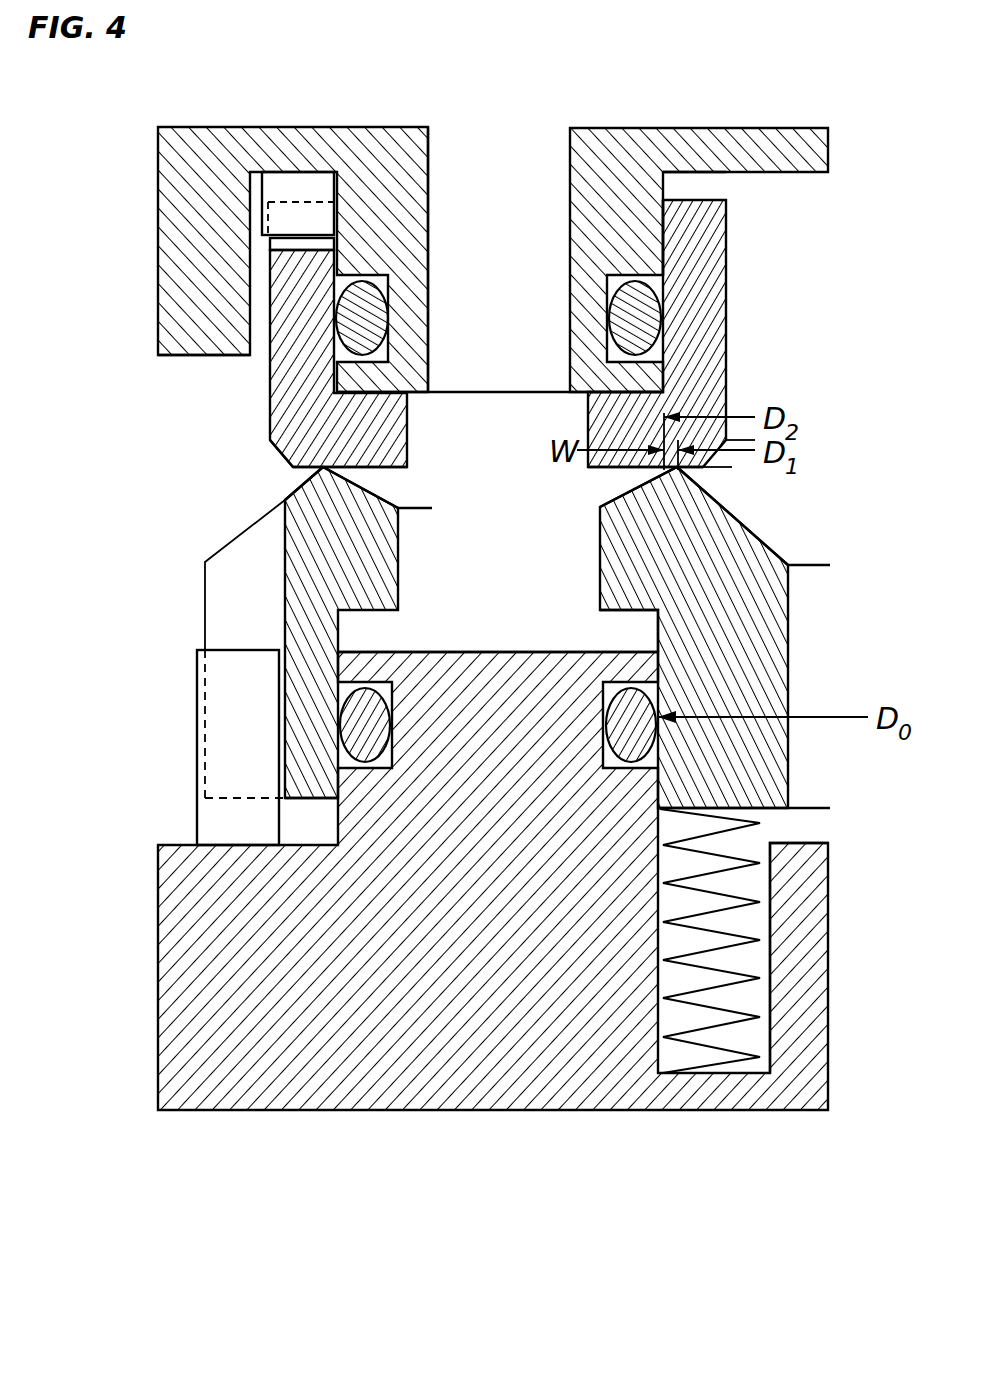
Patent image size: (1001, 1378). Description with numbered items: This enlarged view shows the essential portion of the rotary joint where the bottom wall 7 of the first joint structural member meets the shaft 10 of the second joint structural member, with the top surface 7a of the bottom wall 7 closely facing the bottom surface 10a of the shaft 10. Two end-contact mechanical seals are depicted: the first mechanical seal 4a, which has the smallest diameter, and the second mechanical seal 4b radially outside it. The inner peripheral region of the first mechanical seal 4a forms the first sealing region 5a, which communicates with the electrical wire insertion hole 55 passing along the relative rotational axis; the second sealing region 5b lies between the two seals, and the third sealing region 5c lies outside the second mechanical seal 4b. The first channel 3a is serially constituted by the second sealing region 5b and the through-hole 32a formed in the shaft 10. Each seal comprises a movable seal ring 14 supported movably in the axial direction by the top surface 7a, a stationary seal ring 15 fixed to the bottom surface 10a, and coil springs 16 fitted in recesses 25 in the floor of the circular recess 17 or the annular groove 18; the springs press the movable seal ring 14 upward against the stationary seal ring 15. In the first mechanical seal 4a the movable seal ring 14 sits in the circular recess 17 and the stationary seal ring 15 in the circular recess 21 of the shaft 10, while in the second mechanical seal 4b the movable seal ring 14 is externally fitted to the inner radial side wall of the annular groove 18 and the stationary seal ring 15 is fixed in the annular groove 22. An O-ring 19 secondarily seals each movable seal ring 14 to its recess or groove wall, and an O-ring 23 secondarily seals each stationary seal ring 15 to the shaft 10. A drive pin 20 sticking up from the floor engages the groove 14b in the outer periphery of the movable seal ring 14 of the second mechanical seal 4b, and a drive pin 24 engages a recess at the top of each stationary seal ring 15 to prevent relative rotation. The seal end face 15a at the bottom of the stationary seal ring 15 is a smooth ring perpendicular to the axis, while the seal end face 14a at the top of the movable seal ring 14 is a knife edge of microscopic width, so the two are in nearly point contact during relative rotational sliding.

The bottom wall 7 is at (332, 1085).
The top surface 7a is at (500, 647).
The shaft 10 is at (187, 163).
The bottom surface 10a is at (490, 398).
The movable seal ring 14 is at (380, 567).
The seal end face 14a is at (325, 467).
The groove 14b is at (223, 580).
The stationary seal ring 15 is at (710, 247).
The seal end face 15a is at (350, 468).
The coil spring 16 is at (737, 1047).
The circular recess 17 is at (660, 800).
The annular groove 18 is at (337, 673).
The O-ring 19 is at (380, 716).
The drive pin 20 is at (205, 827).
The circular recess 21 is at (673, 240).
The annular groove 22 is at (337, 262).
The O-ring 23 is at (363, 293).
The drive pin 24 is at (287, 185).
The recess 25 is at (760, 960).
The through-hole 32a is at (428, 192).
The first channel 3a is at (548, 146).
The first mechanical seal 4a is at (802, 595).
The second mechanical seal 4b is at (262, 453).
The first sealing region 5a is at (785, 180).
The second sealing region 5b is at (612, 642).
The third sealing region 5c is at (187, 373).
The electrical wire insertion hole 55 is at (737, 186).